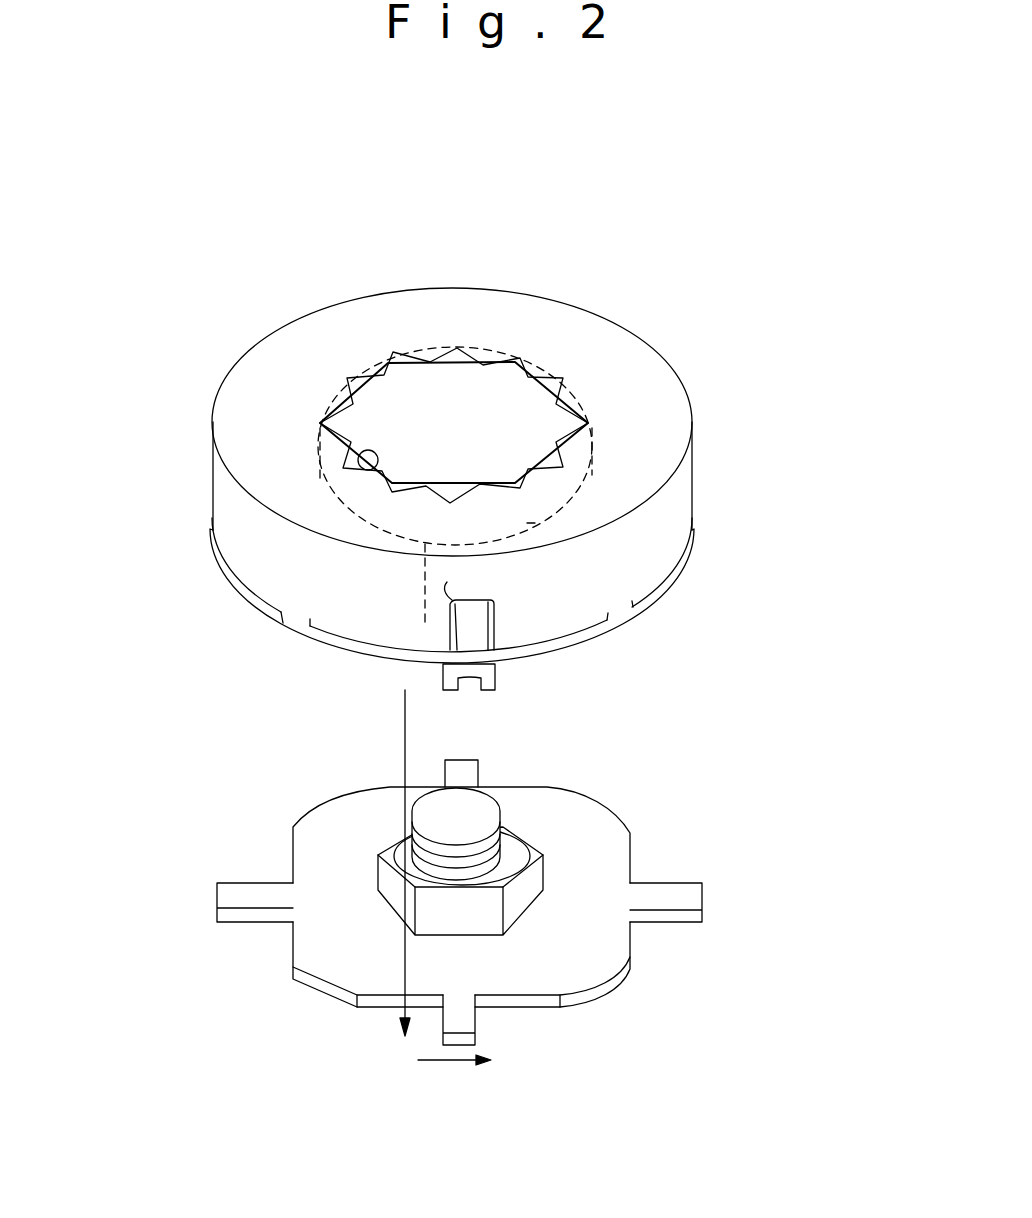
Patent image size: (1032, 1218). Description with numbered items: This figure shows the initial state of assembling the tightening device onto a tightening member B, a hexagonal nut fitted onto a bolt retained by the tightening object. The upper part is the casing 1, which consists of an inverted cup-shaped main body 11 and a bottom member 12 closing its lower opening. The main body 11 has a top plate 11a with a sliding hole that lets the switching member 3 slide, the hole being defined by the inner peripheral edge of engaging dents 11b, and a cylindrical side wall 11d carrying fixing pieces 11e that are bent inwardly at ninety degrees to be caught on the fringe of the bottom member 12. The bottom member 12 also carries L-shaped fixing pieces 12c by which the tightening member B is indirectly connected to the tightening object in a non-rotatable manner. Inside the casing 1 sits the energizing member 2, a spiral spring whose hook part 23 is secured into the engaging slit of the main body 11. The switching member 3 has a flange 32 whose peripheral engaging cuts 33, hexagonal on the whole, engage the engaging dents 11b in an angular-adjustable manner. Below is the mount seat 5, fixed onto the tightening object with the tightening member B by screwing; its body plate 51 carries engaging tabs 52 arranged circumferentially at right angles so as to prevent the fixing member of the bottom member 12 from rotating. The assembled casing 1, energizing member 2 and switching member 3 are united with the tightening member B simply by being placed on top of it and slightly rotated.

The casing 1 is at (710, 371).
The energizing member 2 is at (541, 523).
The switching member 3 is at (446, 385).
The mount seat 5 is at (612, 806).
The main body 11 is at (658, 340).
The top plate 11a is at (237, 435).
The engaging dents 11b is at (372, 470).
The cylindrical side wall 11d is at (673, 519).
The fixing pieces 11e is at (284, 624).
The bottom member 12 is at (226, 585).
The L-shaped fixing pieces 12c is at (496, 672).
The hook part 23 is at (460, 626).
The flange 32 is at (405, 388).
The engaging cuts 33 is at (560, 380).
The body plate 51 is at (560, 962).
The engaging tabs 52 is at (482, 763).
The tightening member B is at (387, 892).